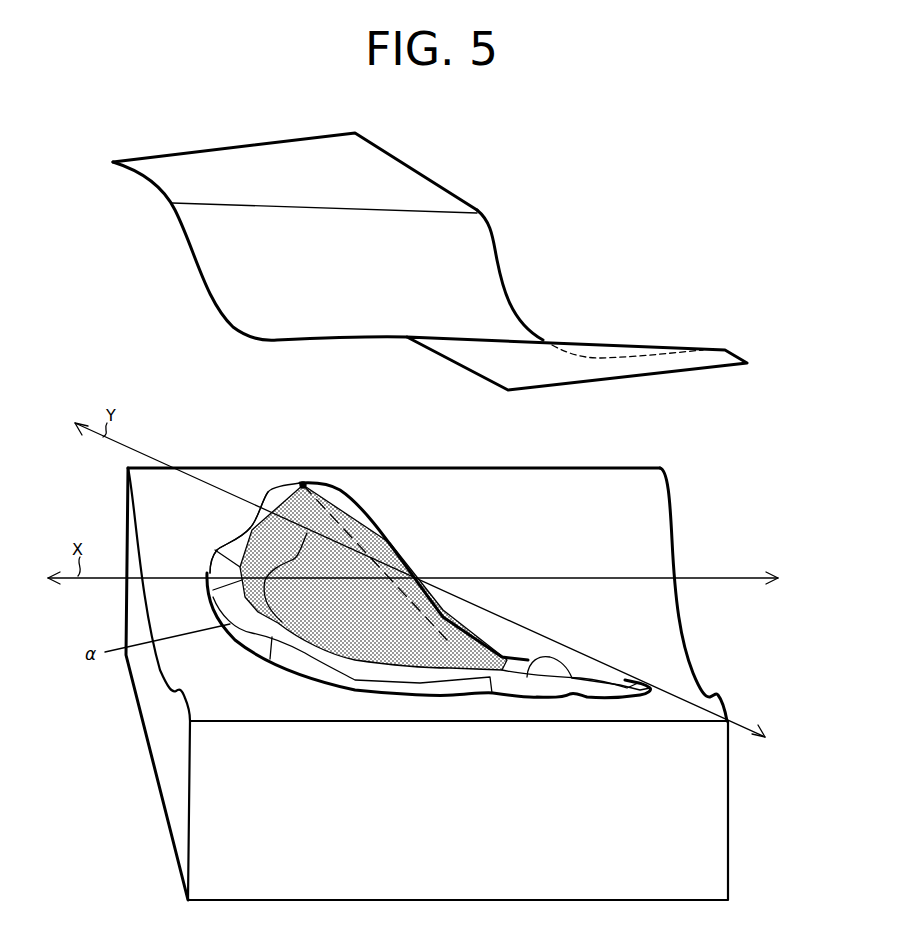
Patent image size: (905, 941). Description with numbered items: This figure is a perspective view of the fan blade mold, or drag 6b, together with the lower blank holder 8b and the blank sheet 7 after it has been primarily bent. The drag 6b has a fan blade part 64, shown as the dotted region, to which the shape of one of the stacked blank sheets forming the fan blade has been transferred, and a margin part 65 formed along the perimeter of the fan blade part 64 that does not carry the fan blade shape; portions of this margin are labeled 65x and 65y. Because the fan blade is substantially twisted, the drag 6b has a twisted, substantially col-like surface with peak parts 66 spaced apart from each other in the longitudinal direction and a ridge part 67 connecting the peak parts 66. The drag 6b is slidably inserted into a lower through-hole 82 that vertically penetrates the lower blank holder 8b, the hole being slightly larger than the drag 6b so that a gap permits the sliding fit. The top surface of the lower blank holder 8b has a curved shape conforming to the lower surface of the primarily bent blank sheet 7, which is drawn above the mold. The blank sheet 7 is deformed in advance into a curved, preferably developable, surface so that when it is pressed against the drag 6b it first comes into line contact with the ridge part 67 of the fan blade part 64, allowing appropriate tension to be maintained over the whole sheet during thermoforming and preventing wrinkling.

The blank sheet 7 is at (402, 170).
The lower blank holder 8b is at (636, 543).
The lower through-hole 82 is at (645, 683).
The fan blade part 64 is at (403, 553).
The margin part 65 is at (350, 503).
The rim side portion x 65x is at (258, 518).
The rim side portion y 65y is at (300, 483).
The peak parts 66 is at (305, 483).
The ridge part 67 is at (447, 610).
The fan blade mold (drag) 6b is at (414, 486).